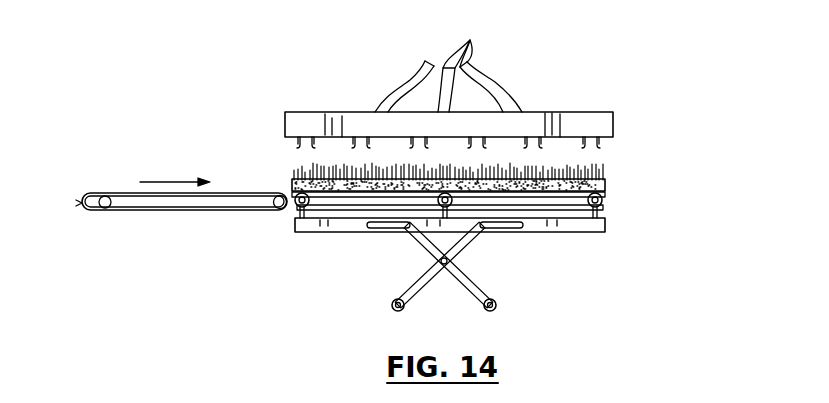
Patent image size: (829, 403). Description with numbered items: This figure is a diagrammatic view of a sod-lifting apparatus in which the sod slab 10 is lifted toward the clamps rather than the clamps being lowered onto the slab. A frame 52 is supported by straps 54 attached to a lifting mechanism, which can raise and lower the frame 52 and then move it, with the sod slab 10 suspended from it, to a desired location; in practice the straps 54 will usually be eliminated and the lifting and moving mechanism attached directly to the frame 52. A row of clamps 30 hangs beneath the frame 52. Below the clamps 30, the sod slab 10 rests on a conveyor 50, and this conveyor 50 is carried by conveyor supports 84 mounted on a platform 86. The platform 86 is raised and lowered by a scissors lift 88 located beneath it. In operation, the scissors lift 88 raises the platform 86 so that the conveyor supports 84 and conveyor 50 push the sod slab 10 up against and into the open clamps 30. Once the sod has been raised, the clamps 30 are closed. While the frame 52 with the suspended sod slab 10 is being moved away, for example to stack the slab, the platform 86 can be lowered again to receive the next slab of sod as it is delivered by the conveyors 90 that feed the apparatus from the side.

The sod slab 10 is at (624, 180).
The clamps 30 is at (598, 148).
The conveyor 50 is at (603, 198).
The frame 52 is at (613, 120).
The straps 54 is at (470, 40).
The conveyor supports 84 is at (601, 212).
The platform 86 is at (583, 225).
The scissors lift 88 is at (495, 270).
The conveyors 90 is at (218, 205).